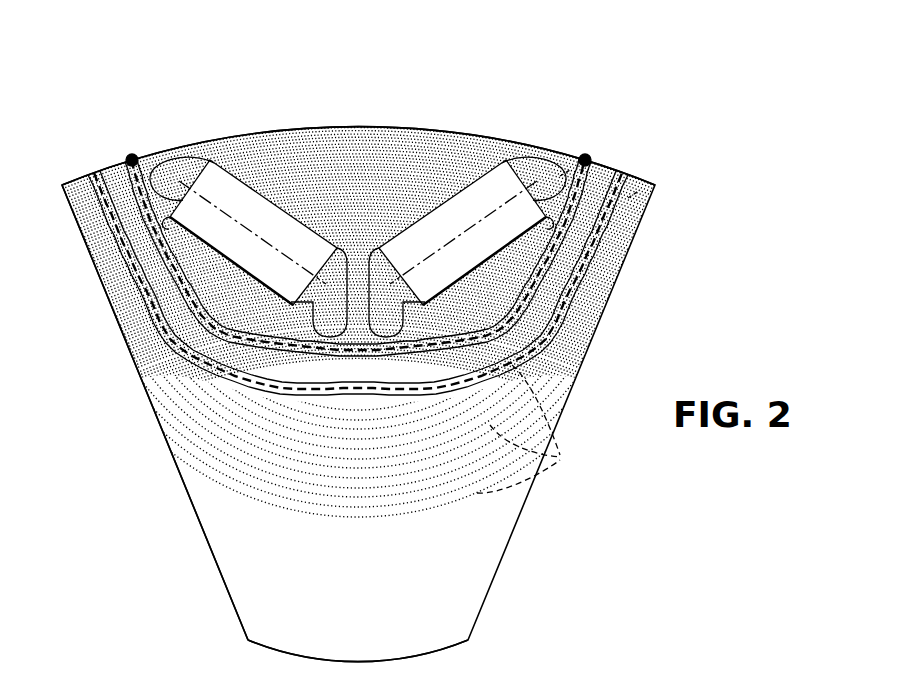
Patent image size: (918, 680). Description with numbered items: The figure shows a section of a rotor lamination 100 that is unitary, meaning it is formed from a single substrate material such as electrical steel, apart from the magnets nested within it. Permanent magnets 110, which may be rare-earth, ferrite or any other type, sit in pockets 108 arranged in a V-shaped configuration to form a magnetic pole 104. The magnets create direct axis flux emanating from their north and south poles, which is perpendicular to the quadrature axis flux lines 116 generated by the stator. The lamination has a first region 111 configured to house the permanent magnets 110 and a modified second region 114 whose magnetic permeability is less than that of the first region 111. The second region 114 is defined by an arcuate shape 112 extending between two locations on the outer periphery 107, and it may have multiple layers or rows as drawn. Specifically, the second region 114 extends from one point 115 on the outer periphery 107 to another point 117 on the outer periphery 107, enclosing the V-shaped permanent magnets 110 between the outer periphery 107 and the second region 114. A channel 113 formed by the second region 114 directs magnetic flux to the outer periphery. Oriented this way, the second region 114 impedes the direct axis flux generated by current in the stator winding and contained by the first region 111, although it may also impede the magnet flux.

The rotor lamination 100 is at (575, 75).
The magnetic pole 104 is at (397, 116).
The outer periphery 107 is at (74, 181).
The pockets 108 is at (178, 180).
The permanent magnets 110 is at (262, 200).
The first region 111 is at (260, 597).
The arcuate shape 112 is at (567, 173).
The channel 113 is at (607, 156).
The second region 114 is at (330, 357).
The point 115 is at (131, 156).
The quadrature axis flux lines 116 is at (542, 429).
The point 117 is at (586, 153).